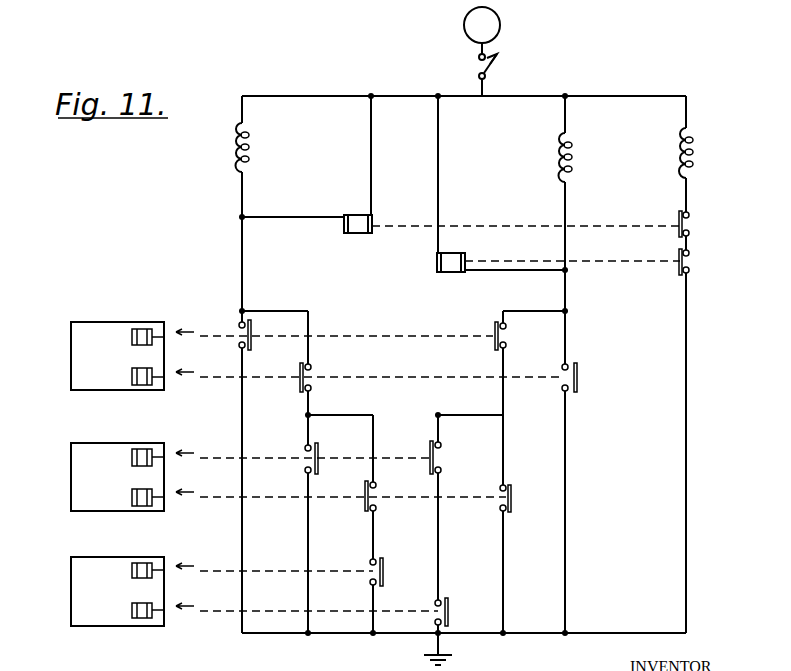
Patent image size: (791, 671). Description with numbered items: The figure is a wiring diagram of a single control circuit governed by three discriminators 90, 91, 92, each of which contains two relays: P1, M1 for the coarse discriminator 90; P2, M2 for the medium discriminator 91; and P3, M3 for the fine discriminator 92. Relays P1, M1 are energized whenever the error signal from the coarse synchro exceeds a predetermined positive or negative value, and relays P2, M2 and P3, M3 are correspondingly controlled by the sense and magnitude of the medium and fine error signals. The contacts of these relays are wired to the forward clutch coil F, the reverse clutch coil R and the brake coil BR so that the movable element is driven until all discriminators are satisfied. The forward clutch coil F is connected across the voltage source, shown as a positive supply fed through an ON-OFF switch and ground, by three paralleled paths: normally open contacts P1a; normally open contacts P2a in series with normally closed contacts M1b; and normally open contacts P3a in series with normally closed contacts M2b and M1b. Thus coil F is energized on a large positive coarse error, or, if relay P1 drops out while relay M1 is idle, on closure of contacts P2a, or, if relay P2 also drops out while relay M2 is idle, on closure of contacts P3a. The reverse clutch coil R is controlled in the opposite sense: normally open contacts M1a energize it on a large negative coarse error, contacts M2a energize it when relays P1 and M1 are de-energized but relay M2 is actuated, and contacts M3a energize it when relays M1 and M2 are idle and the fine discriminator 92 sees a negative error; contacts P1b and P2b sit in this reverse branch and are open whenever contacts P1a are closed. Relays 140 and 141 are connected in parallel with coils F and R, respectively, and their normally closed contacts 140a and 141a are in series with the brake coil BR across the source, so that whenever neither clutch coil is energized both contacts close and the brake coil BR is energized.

The discriminator 90 is at (78, 374).
The discriminator 91 is at (82, 497).
The discriminator 92 is at (82, 611).
The relay 140 is at (352, 226).
The relay 141 is at (474, 301).
The normally closed contacts 140a is at (742, 226).
The normally closed contacts 141a is at (742, 269).
The relay P1 is at (143, 336).
The relay M1 is at (143, 378).
The relay P2 is at (143, 457).
The relay M2 is at (143, 499).
The relay P3 is at (143, 570).
The relay M3 is at (143, 612).
The normally open contacts P1a is at (252, 336).
The contacts P1b is at (500, 337).
The normally open contacts M1a is at (578, 375).
The normally closed contacts M1b is at (312, 370).
The normally open contacts P2a is at (319, 455).
The contacts P2b is at (436, 453).
The contacts M2a is at (512, 505).
The normally closed contacts M2b is at (376, 503).
The normally open contacts P3a is at (384, 565).
The relay contacts M3a is at (449, 607).
The forward clutch coil F is at (249, 147).
The reverse clutch coil R is at (572, 157).
The brake coil BR is at (693, 152).
The on-off switch ON-OFF is at (521, 69).